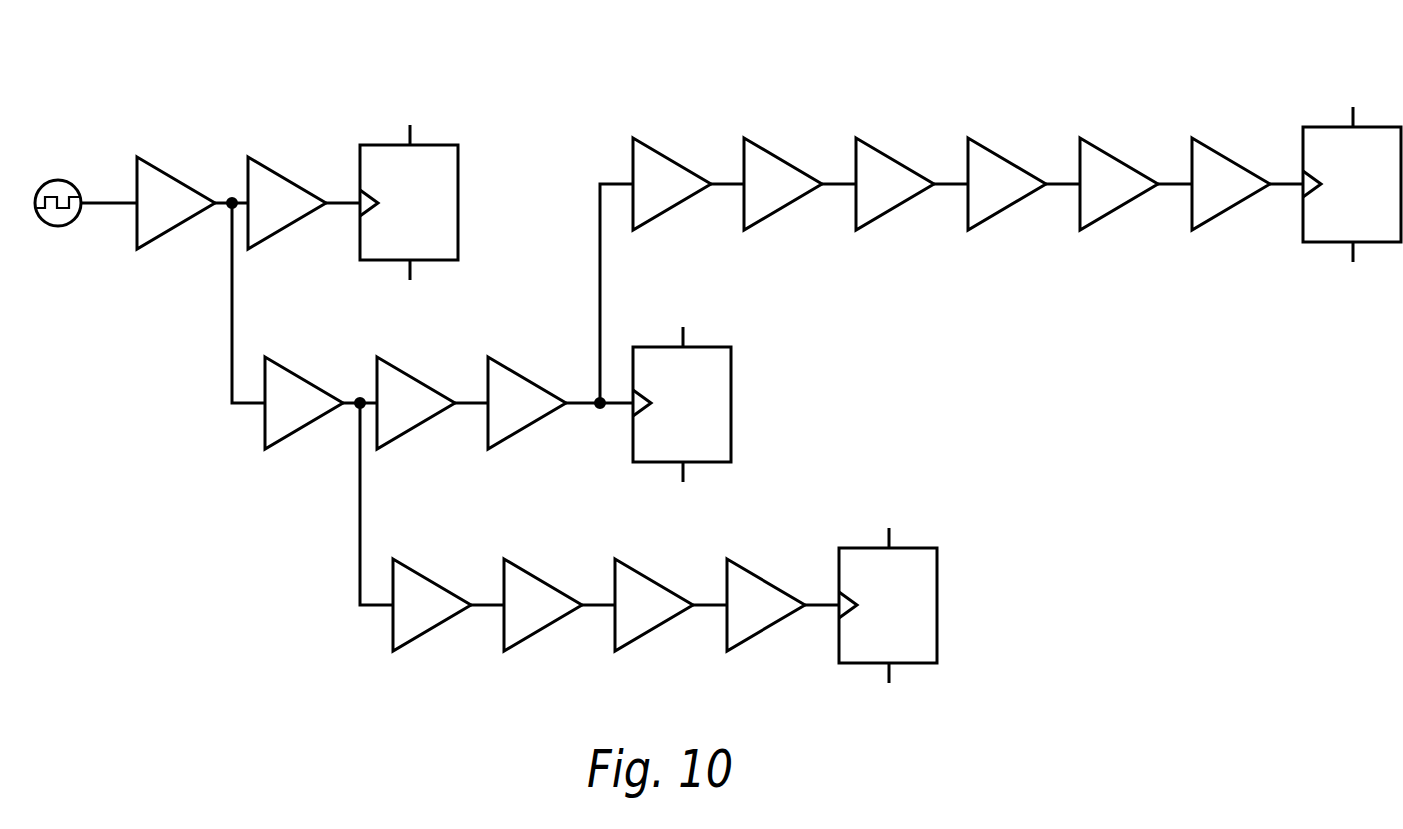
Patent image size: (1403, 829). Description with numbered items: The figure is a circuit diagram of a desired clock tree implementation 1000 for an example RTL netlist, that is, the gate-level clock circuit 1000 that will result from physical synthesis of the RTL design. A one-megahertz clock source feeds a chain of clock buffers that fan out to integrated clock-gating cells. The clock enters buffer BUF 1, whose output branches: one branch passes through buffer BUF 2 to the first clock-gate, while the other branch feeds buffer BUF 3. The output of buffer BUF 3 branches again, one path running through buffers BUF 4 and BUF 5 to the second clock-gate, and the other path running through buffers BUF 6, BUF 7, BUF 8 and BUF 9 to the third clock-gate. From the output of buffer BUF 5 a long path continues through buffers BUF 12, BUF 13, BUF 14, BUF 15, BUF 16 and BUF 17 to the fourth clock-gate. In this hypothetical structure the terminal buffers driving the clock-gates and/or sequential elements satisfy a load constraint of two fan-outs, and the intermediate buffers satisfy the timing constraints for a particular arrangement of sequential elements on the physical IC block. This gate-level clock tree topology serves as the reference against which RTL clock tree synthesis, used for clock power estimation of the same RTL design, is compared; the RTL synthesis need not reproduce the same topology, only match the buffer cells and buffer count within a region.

The gate-level clock circuit 1000 is at (212, 67).
The buffer BUF1 1 is at (176, 203).
The buffer BUF2 2 is at (287, 203).
The buffer BUF3 3 is at (304, 403).
The buffer BUF4 4 is at (416, 403).
The buffer BUF5 5 is at (527, 403).
The buffer BUF6 6 is at (432, 605).
The buffer BUF7 7 is at (543, 605).
The buffer BUF8 8 is at (654, 605).
The buffer BUF9 9 is at (766, 605).
The buffer BUF12 12 is at (672, 184).
The buffer BUF13 13 is at (783, 184).
The buffer BUF14 14 is at (895, 184).
The buffer BUF15 15 is at (1007, 184).
The buffer BUF16 16 is at (1119, 184).
The buffer BUF17 17 is at (1231, 184).